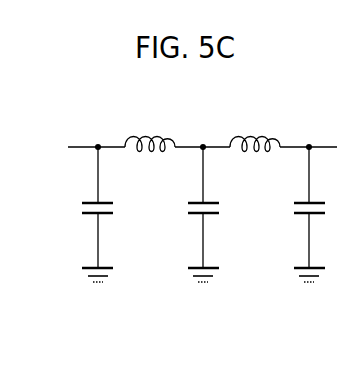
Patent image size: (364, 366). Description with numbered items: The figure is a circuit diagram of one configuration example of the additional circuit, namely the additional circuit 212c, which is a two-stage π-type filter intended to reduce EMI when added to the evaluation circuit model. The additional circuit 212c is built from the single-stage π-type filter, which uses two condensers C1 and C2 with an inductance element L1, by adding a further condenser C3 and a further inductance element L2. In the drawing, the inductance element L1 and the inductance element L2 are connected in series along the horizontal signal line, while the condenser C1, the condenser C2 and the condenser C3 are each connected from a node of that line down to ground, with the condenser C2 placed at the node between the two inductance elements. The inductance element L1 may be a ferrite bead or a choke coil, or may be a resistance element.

The additional circuit 212c is at (236, 356).
The inductance element L1 is at (150, 136).
The inductance element L2 is at (257, 136).
The condenser C1 is at (75, 211).
The condenser C2 is at (181, 211).
The condenser C3 is at (287, 211).